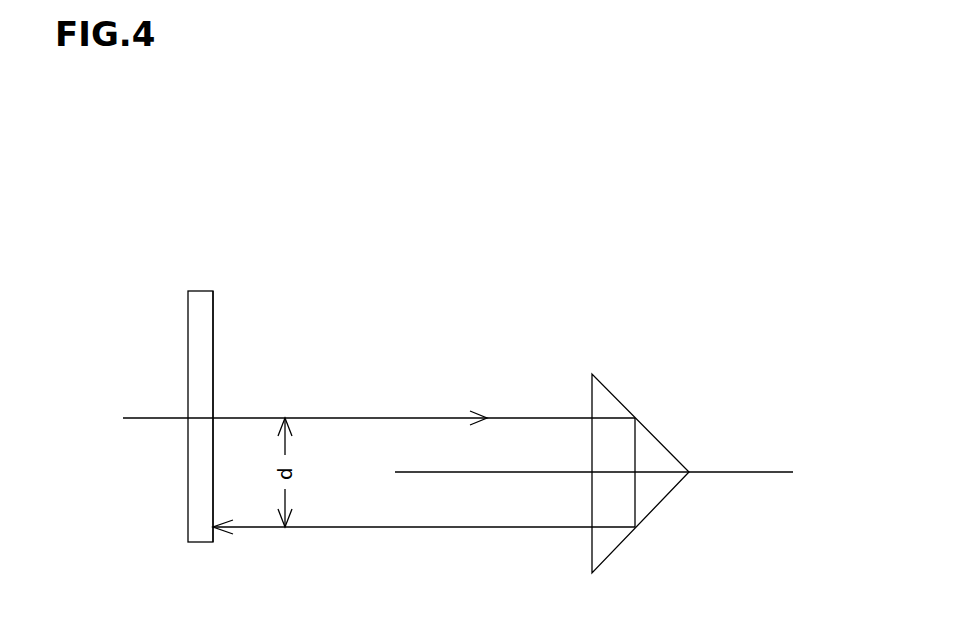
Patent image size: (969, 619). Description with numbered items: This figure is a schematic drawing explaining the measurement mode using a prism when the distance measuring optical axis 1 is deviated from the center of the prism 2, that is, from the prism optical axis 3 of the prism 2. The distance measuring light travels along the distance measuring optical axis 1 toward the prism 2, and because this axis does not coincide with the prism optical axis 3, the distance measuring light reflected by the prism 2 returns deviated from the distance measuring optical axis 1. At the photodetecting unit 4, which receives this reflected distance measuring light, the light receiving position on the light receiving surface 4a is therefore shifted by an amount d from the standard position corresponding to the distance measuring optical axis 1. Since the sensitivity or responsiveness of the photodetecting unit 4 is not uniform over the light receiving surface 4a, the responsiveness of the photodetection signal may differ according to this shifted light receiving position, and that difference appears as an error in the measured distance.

The distance measuring optical axis 1 is at (347, 418).
The prism 2 is at (612, 393).
The prism optical axis 3 is at (732, 472).
The photodetecting unit 4 is at (199, 291).
The light receiving surface 4a is at (214, 316).